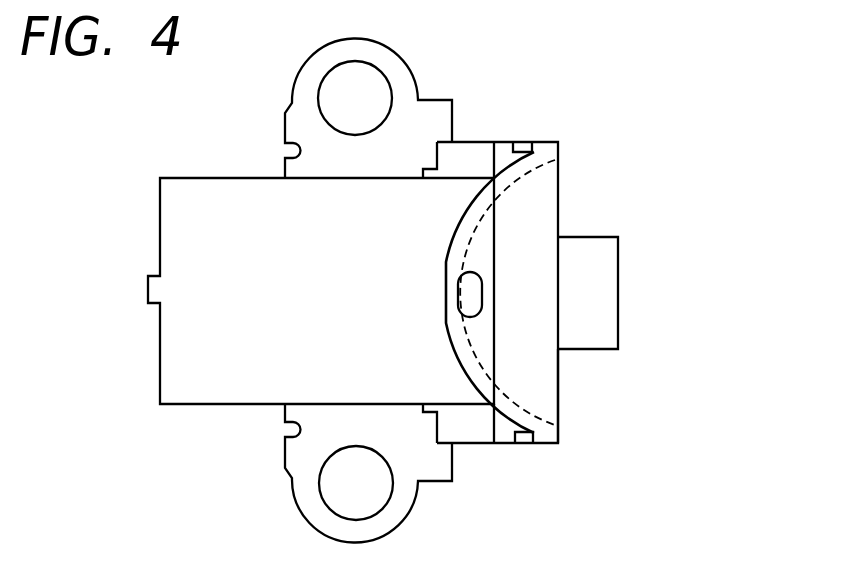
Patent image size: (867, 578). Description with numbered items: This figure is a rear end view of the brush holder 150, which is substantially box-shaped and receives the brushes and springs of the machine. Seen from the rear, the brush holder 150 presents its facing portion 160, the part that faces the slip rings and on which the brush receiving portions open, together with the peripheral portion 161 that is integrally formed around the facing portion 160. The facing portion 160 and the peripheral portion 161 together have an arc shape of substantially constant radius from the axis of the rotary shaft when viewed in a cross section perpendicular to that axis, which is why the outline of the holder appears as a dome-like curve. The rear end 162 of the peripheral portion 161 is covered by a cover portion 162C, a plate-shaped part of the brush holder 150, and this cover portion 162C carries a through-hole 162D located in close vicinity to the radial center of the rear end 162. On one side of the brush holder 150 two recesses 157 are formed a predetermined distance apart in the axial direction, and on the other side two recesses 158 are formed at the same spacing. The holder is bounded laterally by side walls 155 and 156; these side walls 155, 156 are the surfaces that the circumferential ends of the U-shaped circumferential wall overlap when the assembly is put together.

The brush holder 150 is at (482, 287).
The side wall 155 is at (405, 405).
The side wall 156 is at (403, 177).
The recess 157 is at (527, 443).
The recess 158 is at (523, 142).
The facing portion 160 is at (483, 215).
The peripheral portion 161 is at (514, 168).
The rear end 162 is at (508, 187).
The cover portion 162C is at (542, 382).
The through-hole 162D is at (468, 290).